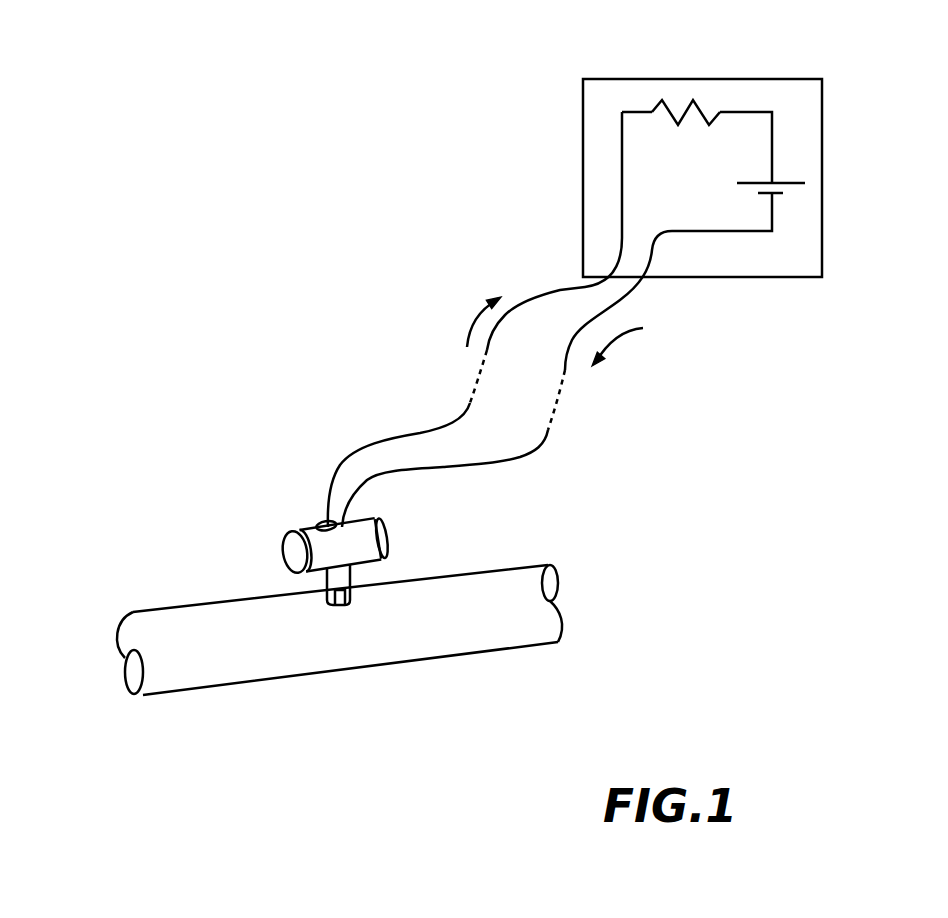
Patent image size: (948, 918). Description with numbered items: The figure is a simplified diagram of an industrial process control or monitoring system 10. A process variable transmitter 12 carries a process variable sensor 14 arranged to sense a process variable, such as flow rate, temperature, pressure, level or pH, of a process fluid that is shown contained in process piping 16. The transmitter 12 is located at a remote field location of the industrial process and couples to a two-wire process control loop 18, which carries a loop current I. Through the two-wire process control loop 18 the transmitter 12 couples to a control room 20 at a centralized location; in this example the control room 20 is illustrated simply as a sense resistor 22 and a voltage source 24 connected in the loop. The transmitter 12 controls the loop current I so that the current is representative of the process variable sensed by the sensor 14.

The industrial process control or monitoring system 10 is at (385, 218).
The process variable transmitter 12 is at (303, 535).
The process variable sensor 14 is at (340, 600).
The process piping 16 is at (322, 670).
The two-wire process control loop 18 is at (405, 467).
The control room 20 is at (807, 79).
The sense resistor 22 is at (703, 103).
The voltage source 24 is at (787, 183).